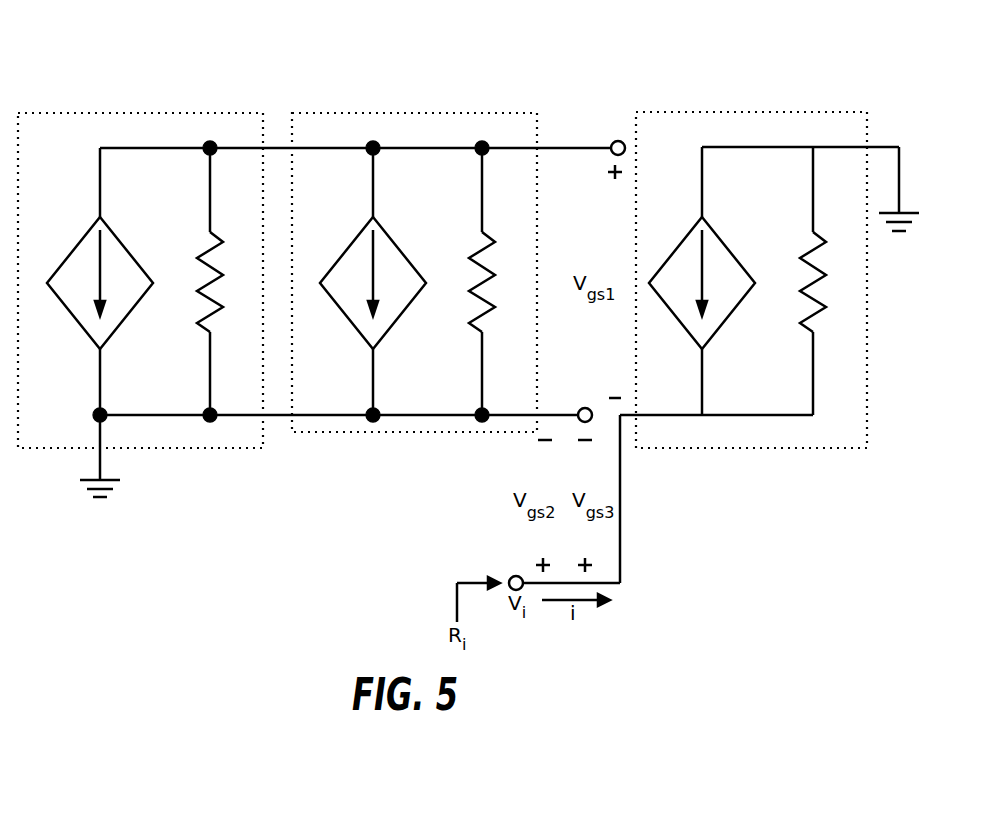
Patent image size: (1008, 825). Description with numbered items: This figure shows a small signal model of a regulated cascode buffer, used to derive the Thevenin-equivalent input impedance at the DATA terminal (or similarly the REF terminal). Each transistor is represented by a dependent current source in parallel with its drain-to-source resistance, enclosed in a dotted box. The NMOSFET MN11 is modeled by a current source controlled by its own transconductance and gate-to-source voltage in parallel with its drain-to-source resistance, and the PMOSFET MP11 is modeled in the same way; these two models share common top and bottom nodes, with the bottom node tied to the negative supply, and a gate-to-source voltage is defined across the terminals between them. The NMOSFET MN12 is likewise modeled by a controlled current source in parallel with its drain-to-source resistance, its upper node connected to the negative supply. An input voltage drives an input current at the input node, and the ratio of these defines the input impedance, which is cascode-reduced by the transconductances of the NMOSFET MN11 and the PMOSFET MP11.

The NMOSFET MN11 is at (128, 110).
The PMOSFET MP11 is at (408, 110).
The NMOSFET MN12 is at (738, 109).